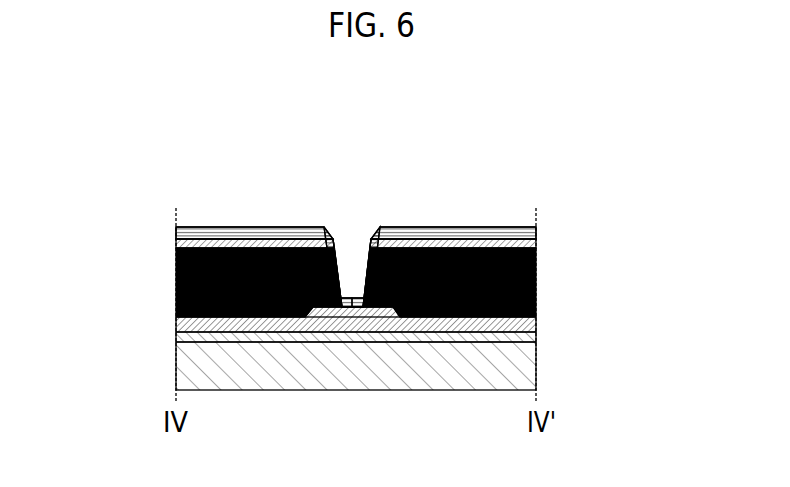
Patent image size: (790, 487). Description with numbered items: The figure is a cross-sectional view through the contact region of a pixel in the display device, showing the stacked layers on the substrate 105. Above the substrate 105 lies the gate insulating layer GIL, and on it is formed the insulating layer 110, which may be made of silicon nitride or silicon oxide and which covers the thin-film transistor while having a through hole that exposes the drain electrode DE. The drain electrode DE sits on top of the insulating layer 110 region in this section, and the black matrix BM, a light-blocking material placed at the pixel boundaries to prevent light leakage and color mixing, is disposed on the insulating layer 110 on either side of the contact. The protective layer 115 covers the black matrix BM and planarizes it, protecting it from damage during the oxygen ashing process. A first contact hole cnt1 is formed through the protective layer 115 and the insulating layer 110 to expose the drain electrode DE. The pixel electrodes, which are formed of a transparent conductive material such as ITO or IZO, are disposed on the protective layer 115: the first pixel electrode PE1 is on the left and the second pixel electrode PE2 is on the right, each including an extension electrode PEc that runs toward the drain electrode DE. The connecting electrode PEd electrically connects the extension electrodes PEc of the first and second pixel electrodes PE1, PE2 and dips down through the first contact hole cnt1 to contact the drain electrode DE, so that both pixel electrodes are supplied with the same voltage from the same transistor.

The first pixel electrode PE1 is at (176, 231).
The second pixel electrode PE2 is at (536, 231).
The extension electrode PEc is at (252, 227).
The connecting electrode PEd is at (355, 298).
The first contact hole cnt1 is at (364, 303).
The protective layer 115 is at (527, 243).
The black matrix BM is at (176, 289).
The insulating layer 110 is at (527, 325).
The gate insulating layer GIL is at (527, 336).
The substrate 105 is at (527, 363).
The drain electrode DE is at (352, 319).